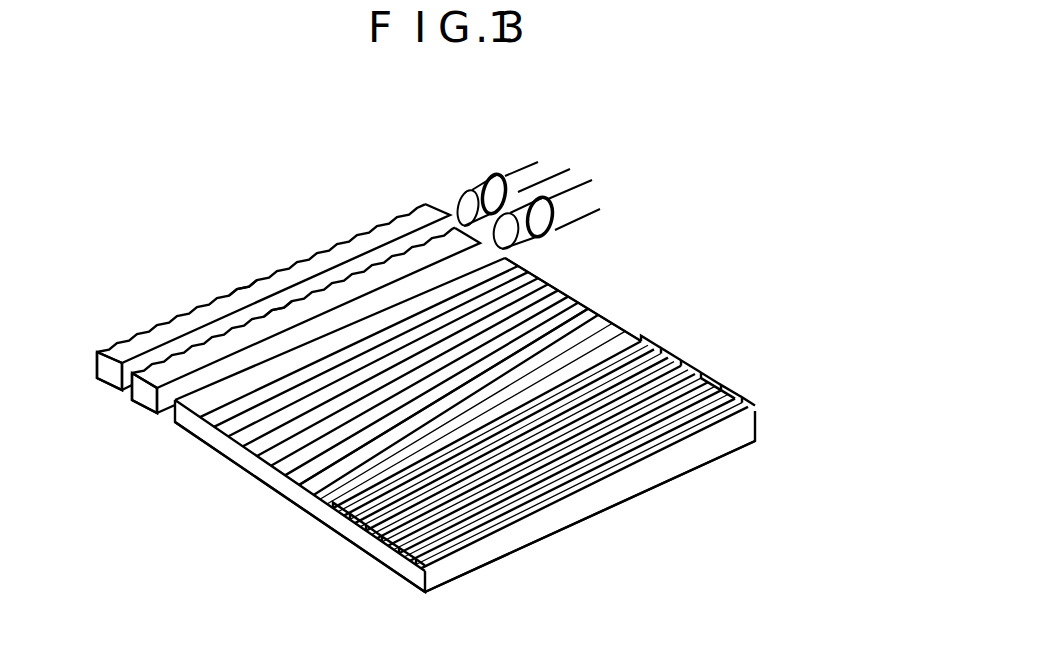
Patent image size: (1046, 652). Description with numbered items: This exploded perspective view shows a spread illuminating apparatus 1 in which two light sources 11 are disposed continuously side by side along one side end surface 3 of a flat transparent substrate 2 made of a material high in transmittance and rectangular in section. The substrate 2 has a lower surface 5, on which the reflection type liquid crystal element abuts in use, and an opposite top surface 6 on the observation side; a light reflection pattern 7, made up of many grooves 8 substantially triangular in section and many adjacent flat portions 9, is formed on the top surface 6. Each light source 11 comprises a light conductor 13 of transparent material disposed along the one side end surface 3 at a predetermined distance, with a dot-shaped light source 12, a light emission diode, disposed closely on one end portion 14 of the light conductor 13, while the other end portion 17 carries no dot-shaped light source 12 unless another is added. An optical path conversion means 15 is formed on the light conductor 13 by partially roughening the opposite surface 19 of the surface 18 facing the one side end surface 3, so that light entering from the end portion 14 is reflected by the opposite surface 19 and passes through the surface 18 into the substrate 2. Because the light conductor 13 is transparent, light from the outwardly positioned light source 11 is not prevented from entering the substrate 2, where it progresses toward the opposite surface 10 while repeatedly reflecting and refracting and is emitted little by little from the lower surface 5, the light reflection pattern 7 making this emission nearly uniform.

The spread illuminating apparatus 1 is at (243, 490).
The transparent substrate 2 is at (333, 512).
The one side end surface 3 is at (168, 408).
The lower surface 5 is at (372, 565).
The top surface 6 is at (578, 297).
The light reflection pattern 7 is at (758, 245).
The grooves 8 is at (713, 387).
The flat portions 9 is at (616, 330).
The opposite surface 10 is at (545, 525).
The light sources 11 is at (455, 211).
The dot-shaped light source 12 is at (455, 237).
The light conductor 13 is at (383, 240).
The one end portion 14 is at (505, 242).
The optical path conversion means 15 is at (203, 303).
The other end portion 17 is at (112, 376).
The surface 18 is at (186, 382).
The opposite surface 19 is at (310, 280).